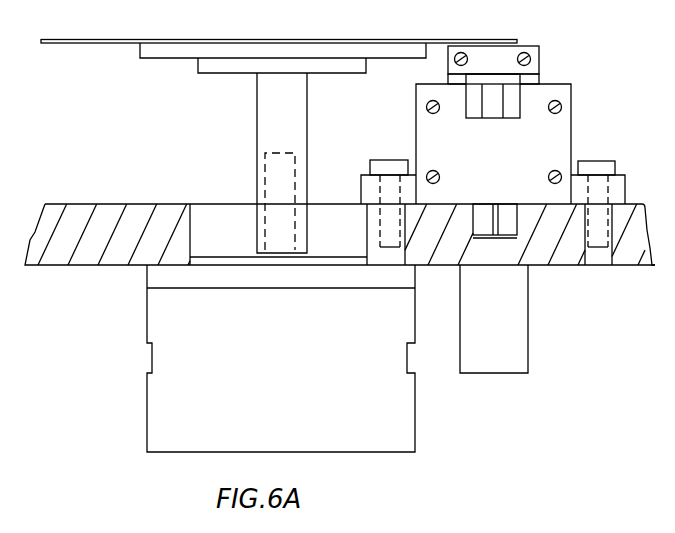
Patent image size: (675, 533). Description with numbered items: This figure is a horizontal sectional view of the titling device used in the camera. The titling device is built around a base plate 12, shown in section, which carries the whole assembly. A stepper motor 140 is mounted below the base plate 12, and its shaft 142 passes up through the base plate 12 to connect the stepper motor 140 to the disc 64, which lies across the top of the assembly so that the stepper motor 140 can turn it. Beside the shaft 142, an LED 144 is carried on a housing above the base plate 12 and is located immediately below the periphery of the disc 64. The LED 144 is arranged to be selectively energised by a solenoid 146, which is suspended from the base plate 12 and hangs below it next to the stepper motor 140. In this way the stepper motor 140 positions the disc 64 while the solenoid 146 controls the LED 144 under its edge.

The base plate 12 is at (623, 257).
The disc 64 is at (67, 44).
The stepper motor 140 is at (153, 393).
The shaft 142 is at (255, 132).
The LED 144 is at (539, 59).
The solenoid 146 is at (510, 317).